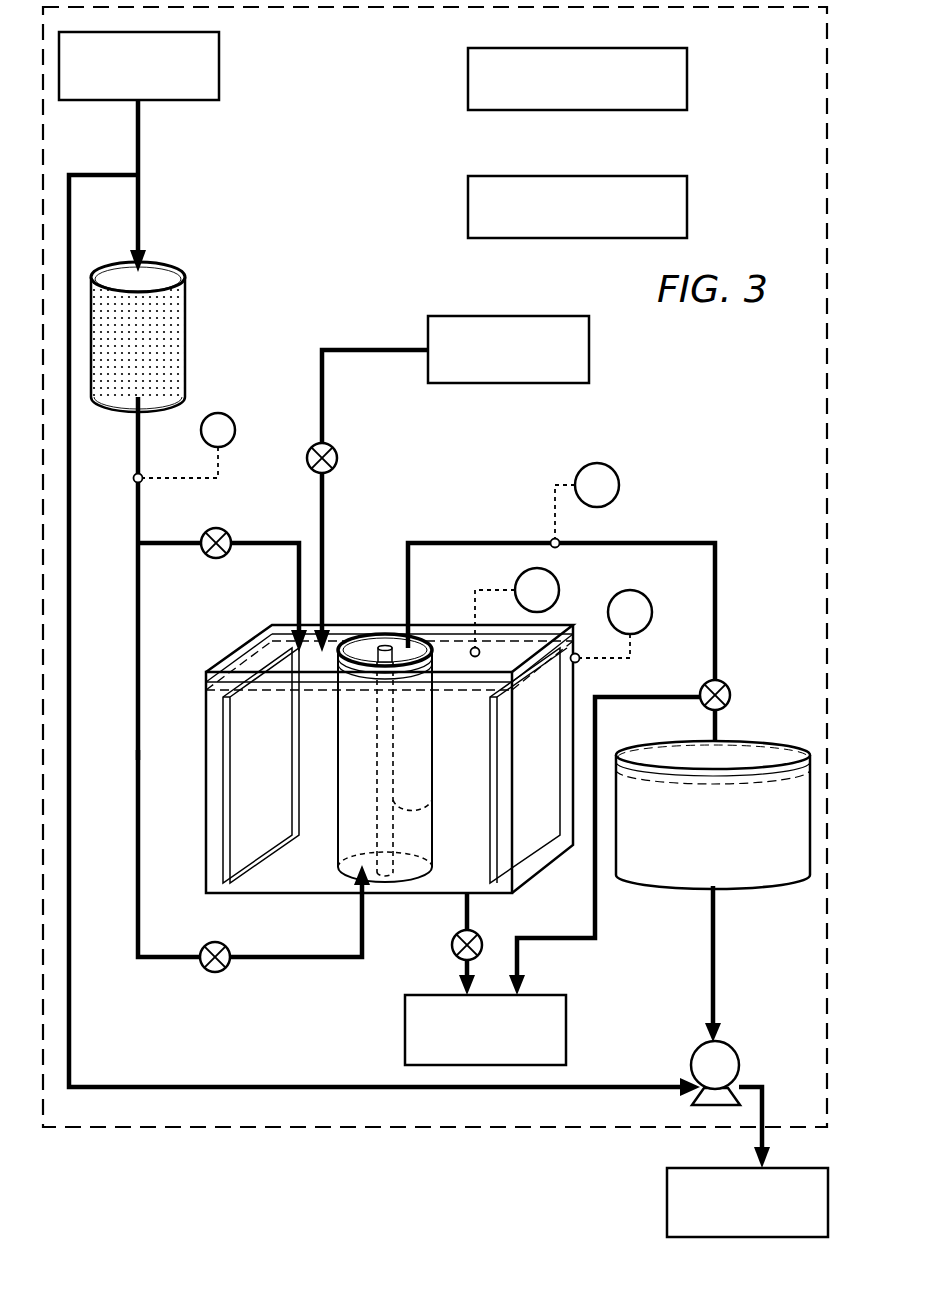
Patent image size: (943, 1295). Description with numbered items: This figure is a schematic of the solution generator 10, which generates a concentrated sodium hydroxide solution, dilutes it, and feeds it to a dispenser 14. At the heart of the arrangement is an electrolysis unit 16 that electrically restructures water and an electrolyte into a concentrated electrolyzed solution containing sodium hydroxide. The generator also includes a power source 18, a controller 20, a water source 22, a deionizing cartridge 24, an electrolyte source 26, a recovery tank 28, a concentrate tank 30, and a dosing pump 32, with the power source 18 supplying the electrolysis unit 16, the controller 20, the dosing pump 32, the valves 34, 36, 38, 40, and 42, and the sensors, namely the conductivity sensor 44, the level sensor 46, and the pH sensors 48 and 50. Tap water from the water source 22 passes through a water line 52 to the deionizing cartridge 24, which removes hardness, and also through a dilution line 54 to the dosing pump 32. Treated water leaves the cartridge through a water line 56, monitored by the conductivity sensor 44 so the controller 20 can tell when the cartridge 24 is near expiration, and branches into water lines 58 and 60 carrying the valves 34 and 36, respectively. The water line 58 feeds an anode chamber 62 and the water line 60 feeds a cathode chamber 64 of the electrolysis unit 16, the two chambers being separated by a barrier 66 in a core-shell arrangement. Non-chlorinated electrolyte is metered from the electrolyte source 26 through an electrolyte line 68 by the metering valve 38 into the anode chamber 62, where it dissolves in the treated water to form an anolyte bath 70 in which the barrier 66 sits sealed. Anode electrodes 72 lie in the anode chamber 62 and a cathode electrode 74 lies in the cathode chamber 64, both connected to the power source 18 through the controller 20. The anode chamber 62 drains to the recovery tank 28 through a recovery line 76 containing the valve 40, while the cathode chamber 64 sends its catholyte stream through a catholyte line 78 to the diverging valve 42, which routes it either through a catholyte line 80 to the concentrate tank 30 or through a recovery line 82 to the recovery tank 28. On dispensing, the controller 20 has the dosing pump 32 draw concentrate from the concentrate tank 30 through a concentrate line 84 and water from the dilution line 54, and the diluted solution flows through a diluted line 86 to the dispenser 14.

The solution generator 10 is at (258, 1134).
The dispenser 14 is at (667, 1197).
The electrolysis unit 16 is at (196, 888).
The power source 18 is at (687, 62).
The controller 20 is at (687, 188).
The water source 22 is at (219, 48).
The deionizing cartridge 24 is at (185, 290).
The electrolyte source 26 is at (589, 336).
The recovery tank 28 is at (405, 1012).
The concentrate tank 30 is at (757, 738).
The dosing pump 32 is at (697, 1052).
The valve 34 is at (216, 528).
The valve 36 is at (226, 970).
The valve 38 is at (337, 455).
The valve 40 is at (452, 944).
The valve 42 is at (728, 684).
The conductivity sensor 44 is at (224, 413).
The level sensor 46 is at (650, 598).
The pH sensor 48 is at (619, 477).
The pH sensor 50 is at (559, 585).
The water line 52 is at (140, 203).
The dilution line 54 is at (170, 1085).
The water line 56 is at (138, 514).
The water line 58 is at (299, 568).
The water line 60 is at (168, 960).
The anode chamber 62 is at (327, 823).
The cathode chamber 64 is at (373, 785).
The barrier 66 is at (425, 762).
The electrolyte line 68 is at (324, 498).
The anolyte bath 70 is at (252, 640).
The anode electrode 72 is at (284, 750).
The cathode electrode 74 is at (432, 800).
The recovery line 76 is at (466, 906).
The catholyte line 78 is at (717, 570).
The catholyte line 80 is at (714, 716).
The recovery line 82 is at (597, 912).
The concentrate line 84 is at (715, 938).
The diluted line 86 is at (764, 1086).